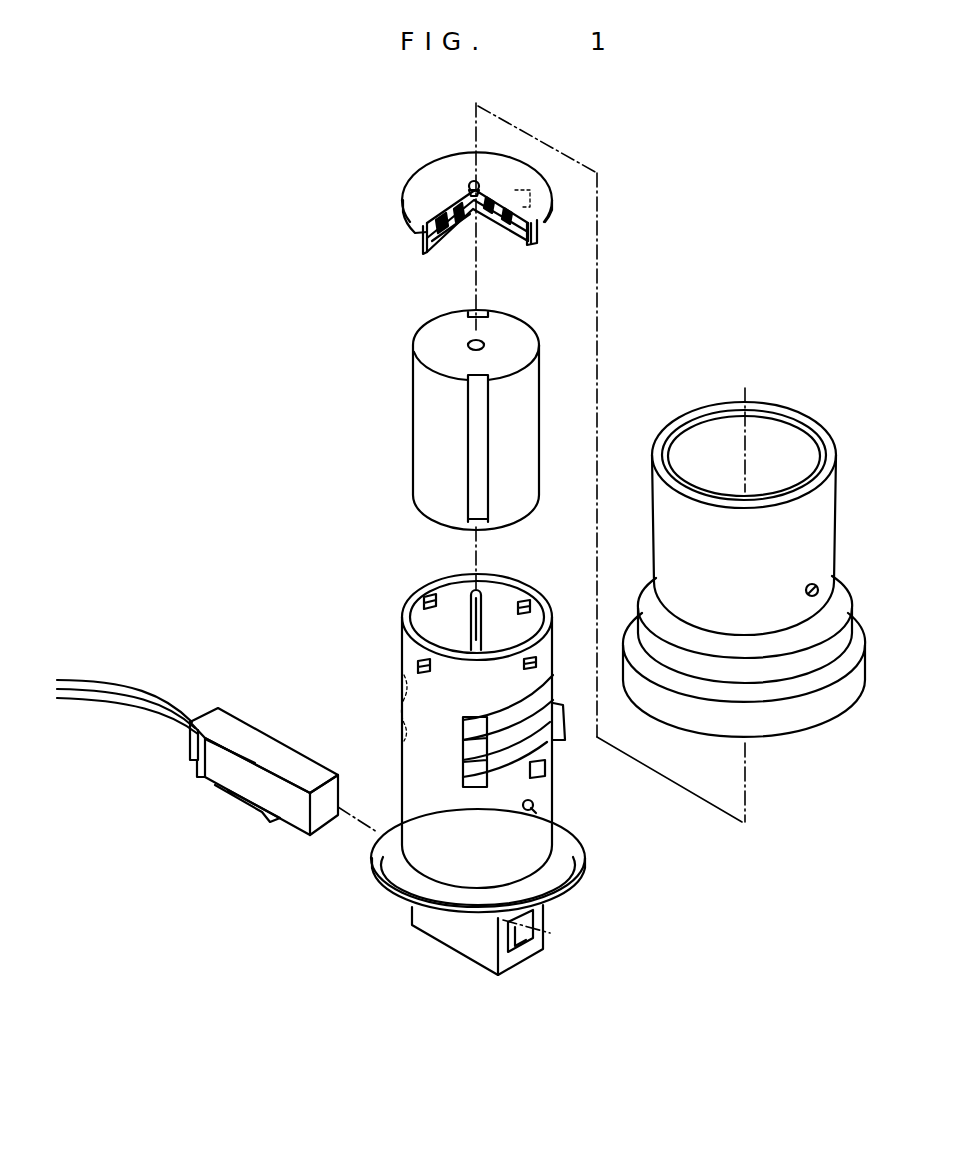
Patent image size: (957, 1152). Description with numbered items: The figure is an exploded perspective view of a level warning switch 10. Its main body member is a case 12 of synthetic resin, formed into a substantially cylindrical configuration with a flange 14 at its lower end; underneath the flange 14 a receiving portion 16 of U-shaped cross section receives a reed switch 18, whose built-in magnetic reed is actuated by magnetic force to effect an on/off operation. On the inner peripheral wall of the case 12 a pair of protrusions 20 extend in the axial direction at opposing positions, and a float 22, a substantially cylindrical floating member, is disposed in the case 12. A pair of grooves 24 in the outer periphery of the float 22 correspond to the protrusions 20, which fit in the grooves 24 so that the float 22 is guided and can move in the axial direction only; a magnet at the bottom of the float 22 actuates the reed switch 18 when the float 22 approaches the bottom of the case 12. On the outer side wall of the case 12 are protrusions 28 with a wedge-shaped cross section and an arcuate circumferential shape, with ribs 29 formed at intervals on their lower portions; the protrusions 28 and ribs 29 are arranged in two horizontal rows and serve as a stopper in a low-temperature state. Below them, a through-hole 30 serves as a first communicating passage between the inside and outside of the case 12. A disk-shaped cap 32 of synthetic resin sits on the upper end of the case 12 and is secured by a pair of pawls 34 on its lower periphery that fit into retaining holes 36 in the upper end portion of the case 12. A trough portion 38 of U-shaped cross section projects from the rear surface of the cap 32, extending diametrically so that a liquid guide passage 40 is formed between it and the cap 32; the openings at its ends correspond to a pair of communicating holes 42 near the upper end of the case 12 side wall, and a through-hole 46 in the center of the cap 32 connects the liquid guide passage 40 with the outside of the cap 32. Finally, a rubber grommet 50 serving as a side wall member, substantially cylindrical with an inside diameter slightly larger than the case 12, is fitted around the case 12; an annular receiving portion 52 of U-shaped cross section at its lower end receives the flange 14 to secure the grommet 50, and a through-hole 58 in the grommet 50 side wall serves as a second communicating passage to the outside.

The level warning switch 10 is at (288, 313).
The case 12 is at (400, 640).
The flange 14 is at (577, 873).
The receiving portion 16 is at (467, 957).
The reed switch 18 is at (290, 830).
The protrusions 20 is at (487, 607).
The float 22 is at (413, 400).
The grooves 24 is at (468, 297).
The protrusions 28 is at (553, 703).
The ribs 29 is at (463, 747).
The through-hole 30 is at (536, 813).
The cap 32 is at (417, 173).
The pawls 34 is at (528, 243).
The retaining holes 36 is at (430, 600).
The trough portion 38 is at (427, 243).
The liquid guide passage 40 is at (456, 243).
The communicating holes 42 is at (524, 607).
The through-hole 46 is at (472, 182).
The grommet 50 is at (808, 453).
The annular receiving portion 52 is at (790, 708).
The through-hole 58 is at (818, 590).